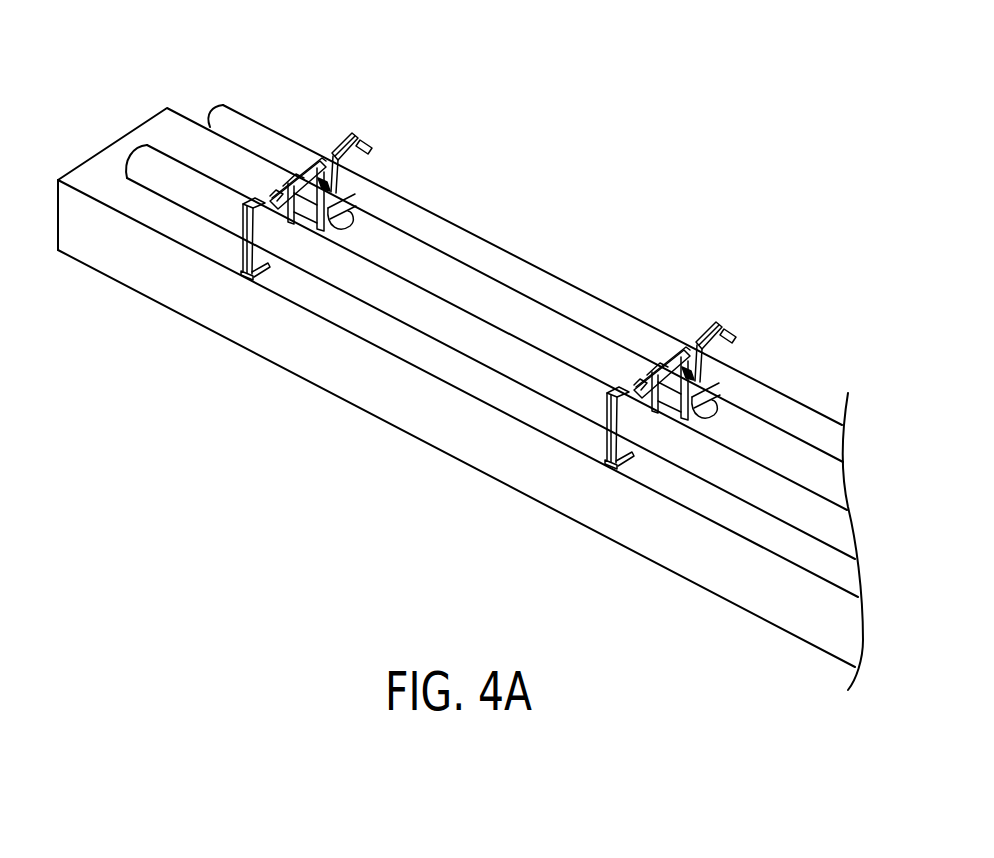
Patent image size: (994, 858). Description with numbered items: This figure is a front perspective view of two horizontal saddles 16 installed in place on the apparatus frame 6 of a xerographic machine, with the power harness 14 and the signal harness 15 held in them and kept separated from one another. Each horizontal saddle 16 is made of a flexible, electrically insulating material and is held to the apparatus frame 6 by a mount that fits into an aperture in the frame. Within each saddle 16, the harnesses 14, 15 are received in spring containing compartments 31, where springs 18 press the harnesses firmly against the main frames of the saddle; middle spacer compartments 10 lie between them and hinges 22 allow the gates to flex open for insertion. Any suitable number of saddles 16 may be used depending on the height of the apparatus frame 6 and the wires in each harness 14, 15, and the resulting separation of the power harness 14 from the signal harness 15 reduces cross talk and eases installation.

The apparatus frame 6 is at (841, 627).
The middle spacer compartment 10 is at (297, 168).
The power harness 14 is at (505, 260).
The signal harness 15 is at (440, 322).
The horizontal saddle 16 is at (289, 177).
The spring 18 is at (280, 196).
The hinge 22 is at (243, 203).
The spring containing compartment 31 is at (370, 148).